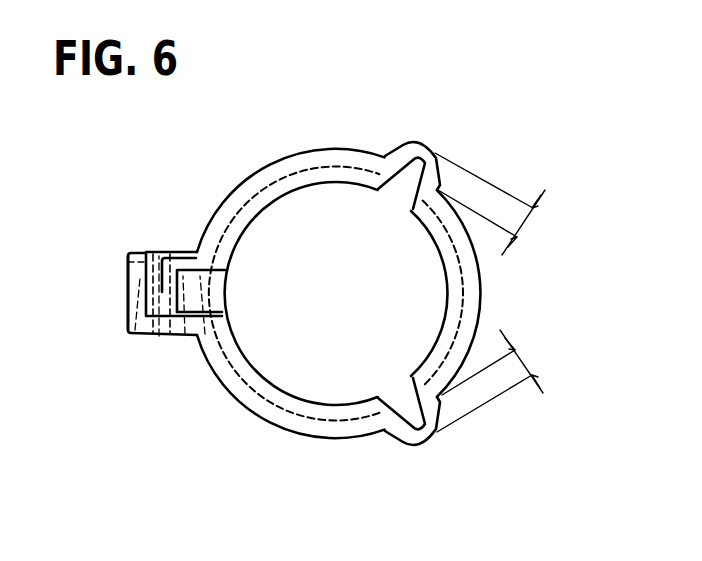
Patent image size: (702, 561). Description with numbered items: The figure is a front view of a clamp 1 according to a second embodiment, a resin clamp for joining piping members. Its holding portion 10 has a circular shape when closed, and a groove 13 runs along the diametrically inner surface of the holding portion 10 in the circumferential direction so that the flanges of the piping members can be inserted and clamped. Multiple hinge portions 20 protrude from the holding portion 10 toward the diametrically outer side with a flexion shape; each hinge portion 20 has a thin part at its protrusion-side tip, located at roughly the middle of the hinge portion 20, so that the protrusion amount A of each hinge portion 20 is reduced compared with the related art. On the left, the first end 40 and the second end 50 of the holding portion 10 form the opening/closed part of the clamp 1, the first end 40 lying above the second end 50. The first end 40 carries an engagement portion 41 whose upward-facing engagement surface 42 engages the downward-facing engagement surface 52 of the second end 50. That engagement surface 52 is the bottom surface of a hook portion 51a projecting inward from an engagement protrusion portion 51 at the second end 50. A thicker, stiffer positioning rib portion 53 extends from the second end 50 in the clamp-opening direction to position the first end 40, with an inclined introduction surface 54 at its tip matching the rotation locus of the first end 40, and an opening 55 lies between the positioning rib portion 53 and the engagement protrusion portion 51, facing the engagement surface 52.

The clamp 1 is at (192, 440).
The holding portion 10 is at (300, 160).
The groove 13 is at (329, 418).
The hinge portion 20 is at (427, 150).
The first end 40 is at (181, 248).
The engagement portion 41 is at (170, 252).
The engagement surface 42 is at (147, 252).
The second end 50 is at (126, 331).
The engagement protrusion portion 51 is at (128, 297).
The hook portion 51a is at (137, 280).
The engagement surface 52 is at (159, 336).
The positioning rib portion 53 is at (210, 330).
The introduction surface 54 is at (192, 330).
The opening 55 is at (133, 333).
The protrusion amount A is at (524, 218).